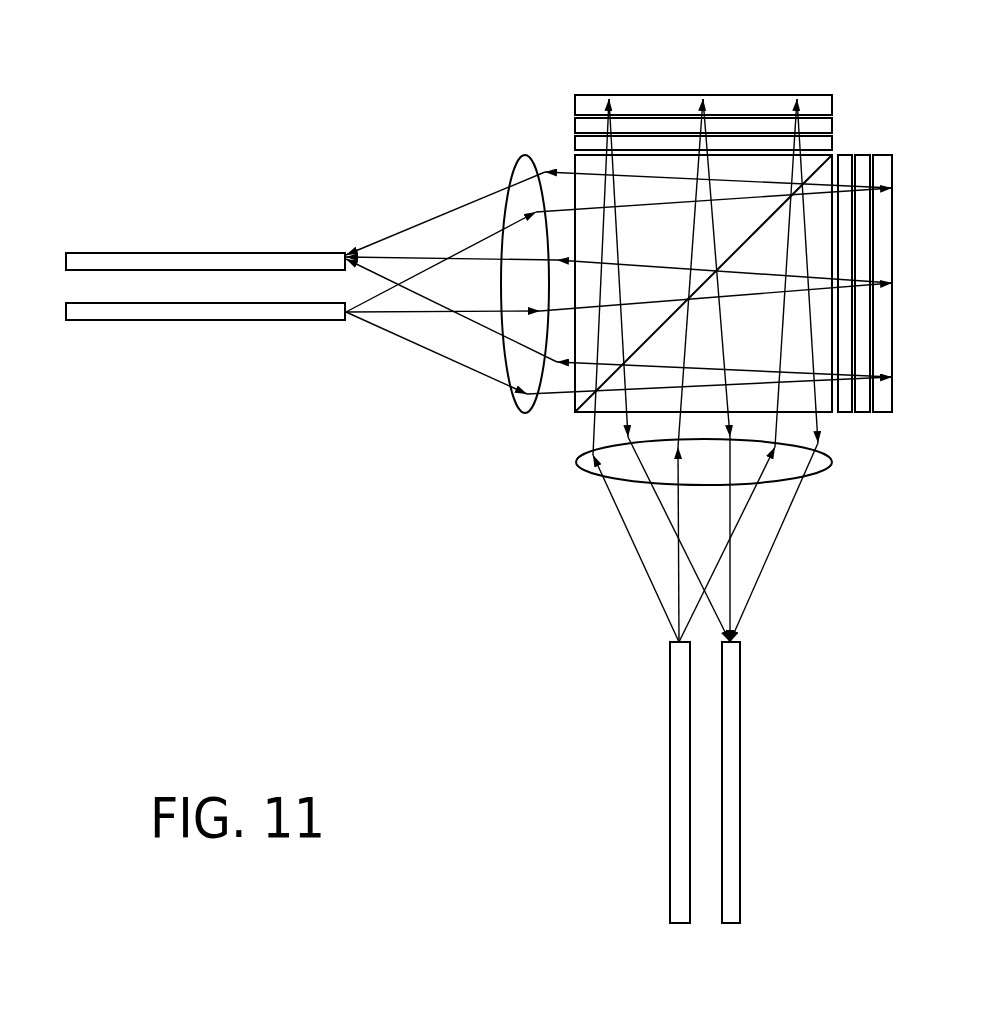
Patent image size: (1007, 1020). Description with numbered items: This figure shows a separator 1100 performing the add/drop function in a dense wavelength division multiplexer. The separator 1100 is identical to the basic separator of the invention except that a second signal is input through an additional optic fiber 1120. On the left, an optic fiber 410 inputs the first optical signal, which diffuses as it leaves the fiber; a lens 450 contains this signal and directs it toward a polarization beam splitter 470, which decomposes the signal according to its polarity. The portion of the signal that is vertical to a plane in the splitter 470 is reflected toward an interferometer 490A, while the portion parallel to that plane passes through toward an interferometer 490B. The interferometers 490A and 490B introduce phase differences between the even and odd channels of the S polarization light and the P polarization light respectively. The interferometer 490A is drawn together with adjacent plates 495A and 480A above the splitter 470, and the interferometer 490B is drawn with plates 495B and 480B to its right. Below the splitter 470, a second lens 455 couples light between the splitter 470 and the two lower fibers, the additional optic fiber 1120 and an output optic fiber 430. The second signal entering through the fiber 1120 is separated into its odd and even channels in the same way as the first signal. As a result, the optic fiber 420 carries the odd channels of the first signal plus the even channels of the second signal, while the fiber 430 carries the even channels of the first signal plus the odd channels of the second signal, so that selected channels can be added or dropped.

The separator 1100 is at (725, 55).
The optic fiber 420 is at (126, 252).
The optic fiber 410 is at (127, 322).
The lens 450 is at (524, 155).
The interferometer 490A is at (832, 100).
The plate 495A is at (832, 125).
The plate 480A is at (832, 148).
The polarization beam splitter 470 is at (578, 416).
The plate 480B is at (847, 412).
The plate 495B is at (863, 412).
The interferometer 490B is at (883, 412).
The lens 455 is at (578, 464).
The additional optic fiber 1120 is at (670, 777).
The optic fiber 430 is at (740, 775).